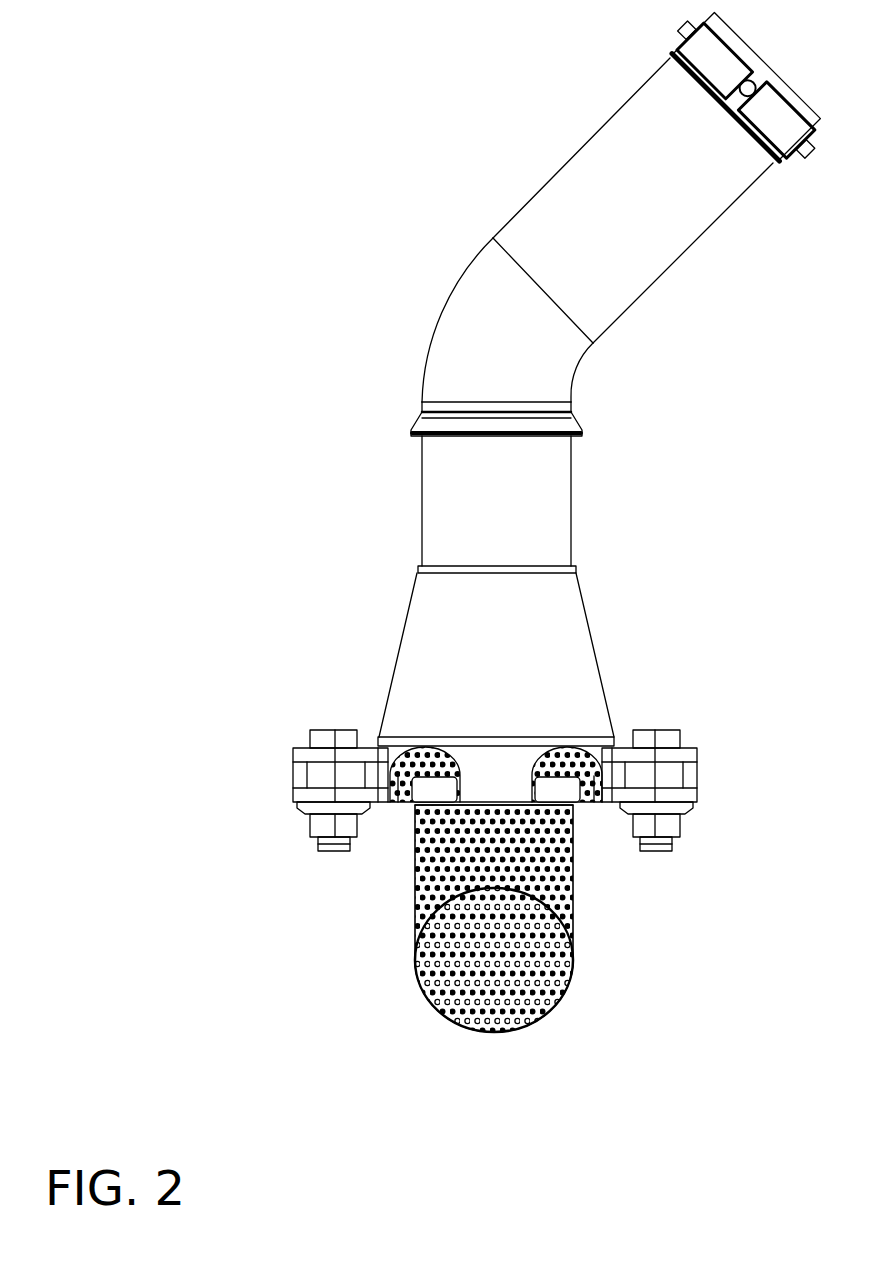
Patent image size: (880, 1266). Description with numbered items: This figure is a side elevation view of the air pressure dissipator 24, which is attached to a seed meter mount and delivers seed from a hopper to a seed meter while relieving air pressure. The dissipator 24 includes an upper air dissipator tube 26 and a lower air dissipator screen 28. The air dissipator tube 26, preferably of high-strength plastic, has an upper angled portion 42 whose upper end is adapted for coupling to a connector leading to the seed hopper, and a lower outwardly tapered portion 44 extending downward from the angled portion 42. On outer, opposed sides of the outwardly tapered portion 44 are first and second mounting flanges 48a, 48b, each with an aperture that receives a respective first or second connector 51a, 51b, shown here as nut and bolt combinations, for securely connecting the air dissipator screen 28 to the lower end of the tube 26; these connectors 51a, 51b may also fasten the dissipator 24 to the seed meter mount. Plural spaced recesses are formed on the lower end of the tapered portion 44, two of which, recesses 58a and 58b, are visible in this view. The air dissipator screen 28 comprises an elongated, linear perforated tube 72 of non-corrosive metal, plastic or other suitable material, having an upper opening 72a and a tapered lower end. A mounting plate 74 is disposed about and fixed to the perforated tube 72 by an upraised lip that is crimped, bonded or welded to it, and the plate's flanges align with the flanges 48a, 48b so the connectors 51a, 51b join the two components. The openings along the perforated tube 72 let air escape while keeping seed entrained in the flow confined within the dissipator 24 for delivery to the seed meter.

The air pressure dissipator 24 is at (262, 327).
The air dissipator tube 26 is at (556, 143).
The air dissipator screen 28 is at (362, 1014).
The upper angled portion 42 is at (437, 310).
The lower outwardly tapered portion 44 is at (402, 638).
The first mounting flange 48a is at (295, 757).
The second mounting flange 48b is at (697, 773).
The first connector 51a is at (323, 730).
The second connector 51b is at (658, 730).
The recess 58a is at (415, 823).
The recess 58b is at (600, 803).
The perforated tube 72 is at (415, 918).
The upper opening 72a is at (567, 933).
The mounting plate 74 is at (297, 802).